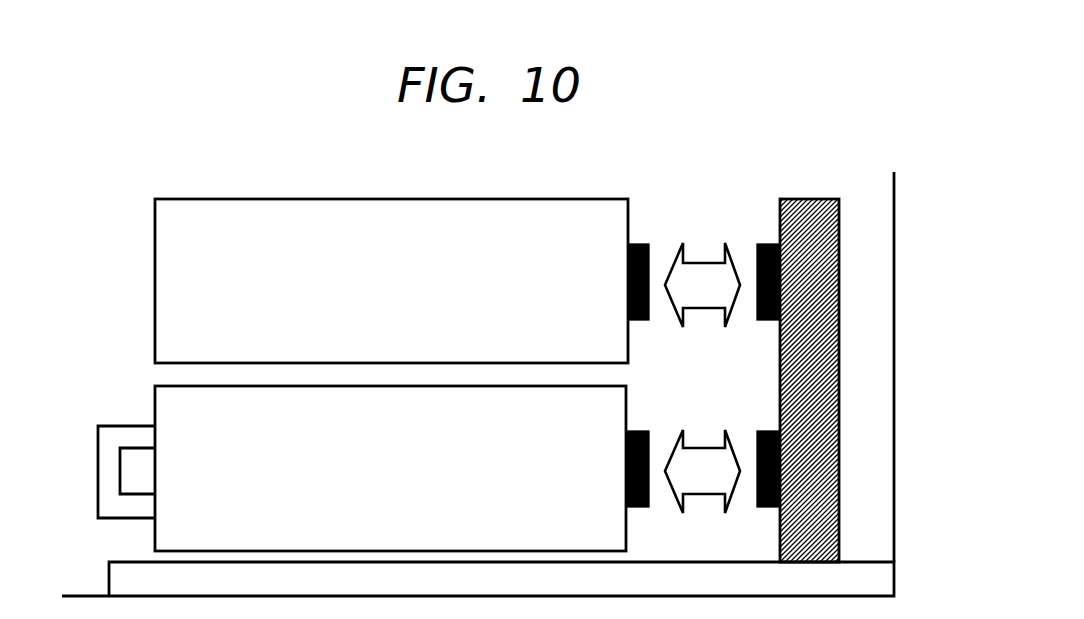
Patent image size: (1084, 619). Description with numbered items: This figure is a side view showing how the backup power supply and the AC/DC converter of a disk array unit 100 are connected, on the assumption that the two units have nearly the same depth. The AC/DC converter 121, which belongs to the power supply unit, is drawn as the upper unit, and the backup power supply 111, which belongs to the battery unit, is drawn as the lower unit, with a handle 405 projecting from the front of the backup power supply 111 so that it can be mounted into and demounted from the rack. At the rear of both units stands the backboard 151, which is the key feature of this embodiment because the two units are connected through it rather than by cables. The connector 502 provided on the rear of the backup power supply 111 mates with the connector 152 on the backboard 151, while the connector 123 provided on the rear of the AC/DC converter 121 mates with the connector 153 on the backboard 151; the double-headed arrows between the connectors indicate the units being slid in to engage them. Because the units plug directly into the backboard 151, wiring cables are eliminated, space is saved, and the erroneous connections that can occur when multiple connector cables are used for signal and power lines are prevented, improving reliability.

The disk array unit 100 is at (946, 264).
The backup power supply 111 is at (161, 406).
The AC/DC converter 121 is at (159, 268).
The connector 123 is at (638, 243).
The backboard 151 is at (795, 199).
The connector 152 is at (768, 431).
The connector 153 is at (768, 243).
The handle 405 is at (130, 518).
The connector 502 is at (638, 431).